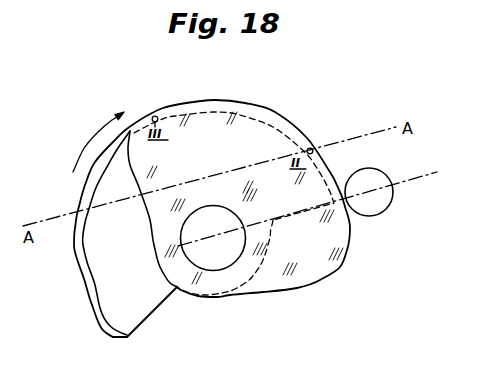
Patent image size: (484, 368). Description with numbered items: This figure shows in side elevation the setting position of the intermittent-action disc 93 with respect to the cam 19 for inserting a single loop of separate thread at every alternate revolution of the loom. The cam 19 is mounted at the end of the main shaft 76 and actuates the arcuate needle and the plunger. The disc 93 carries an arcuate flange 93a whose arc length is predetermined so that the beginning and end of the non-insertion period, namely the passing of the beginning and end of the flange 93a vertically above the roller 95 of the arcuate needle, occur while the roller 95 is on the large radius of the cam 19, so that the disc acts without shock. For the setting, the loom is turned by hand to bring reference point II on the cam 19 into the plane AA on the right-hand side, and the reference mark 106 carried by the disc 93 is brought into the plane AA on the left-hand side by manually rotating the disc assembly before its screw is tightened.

The cam 19 is at (345, 259).
The intermittent-action disc 93 is at (108, 192).
The flange of the intermittent-action disc 93a is at (95, 303).
The reference mark 106 is at (86, 209).
The main shaft 76 is at (213, 257).
The roller of the arcuate needle 95 is at (393, 199).